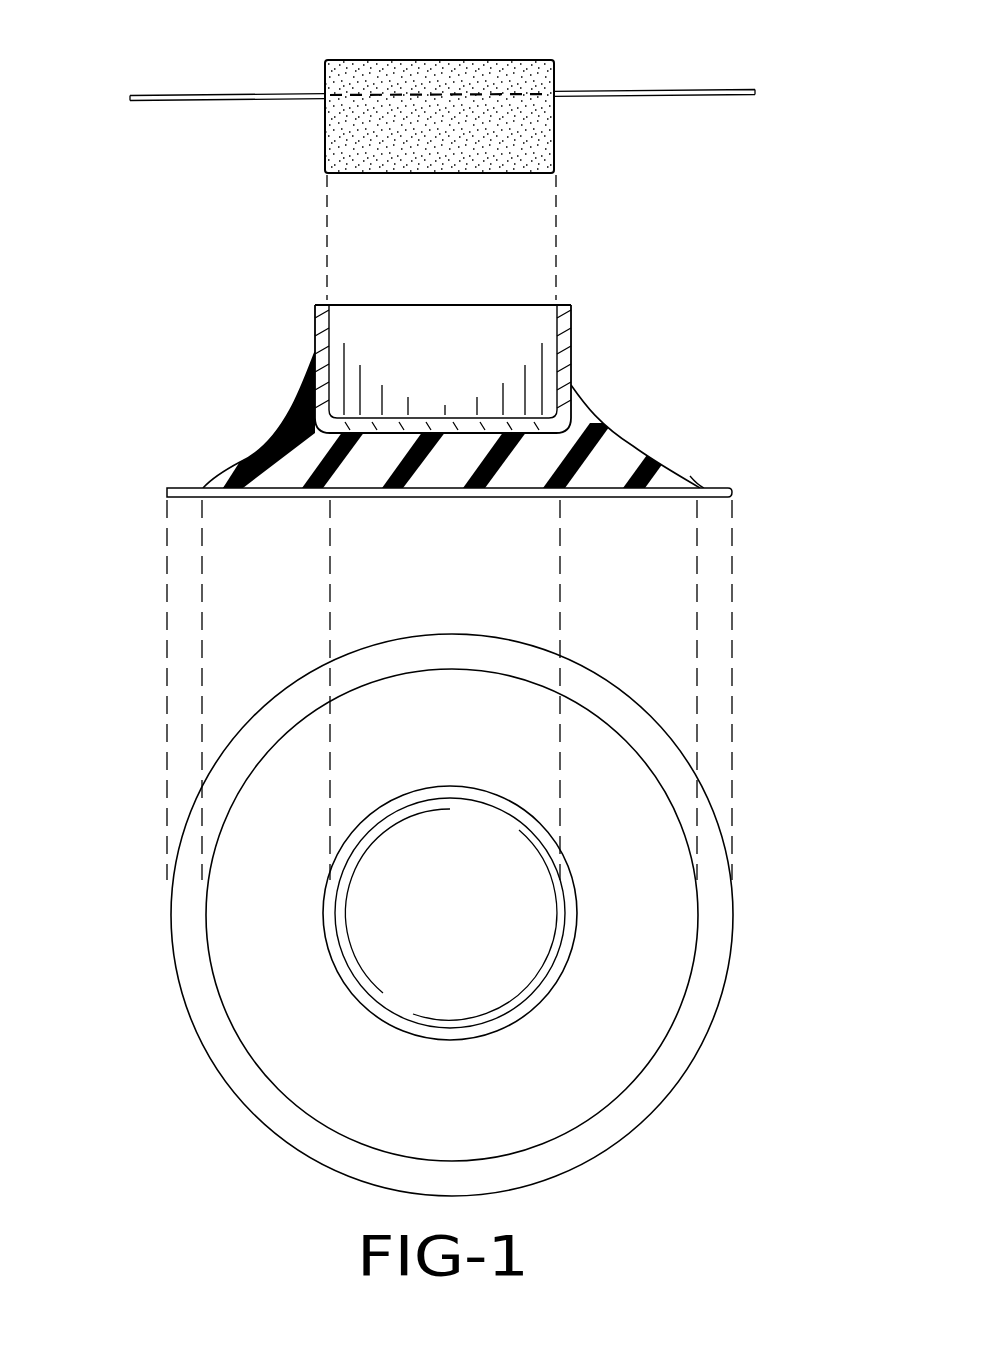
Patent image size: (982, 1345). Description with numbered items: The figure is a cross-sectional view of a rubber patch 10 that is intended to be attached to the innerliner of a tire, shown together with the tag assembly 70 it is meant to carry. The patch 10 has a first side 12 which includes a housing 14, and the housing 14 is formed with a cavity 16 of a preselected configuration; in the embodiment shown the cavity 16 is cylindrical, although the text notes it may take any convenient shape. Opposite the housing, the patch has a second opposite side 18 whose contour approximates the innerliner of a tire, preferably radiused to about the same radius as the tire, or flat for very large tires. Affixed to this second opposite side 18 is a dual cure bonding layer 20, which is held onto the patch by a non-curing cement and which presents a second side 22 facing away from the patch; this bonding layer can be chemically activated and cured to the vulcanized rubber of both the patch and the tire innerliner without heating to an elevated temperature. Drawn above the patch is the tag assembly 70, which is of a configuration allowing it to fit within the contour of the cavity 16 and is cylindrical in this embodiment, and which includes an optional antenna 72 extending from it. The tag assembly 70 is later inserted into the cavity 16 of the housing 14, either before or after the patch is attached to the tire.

The rubber patch 10 is at (242, 463).
The first side 12 is at (633, 446).
The housing 14 is at (326, 370).
The cavity 16 is at (368, 306).
The second opposite side 18 is at (698, 487).
The dual cure bonding layer 20 is at (173, 494).
The second side 22 is at (262, 500).
The tag assembly 70 is at (438, 58).
The antenna 72 is at (612, 93).